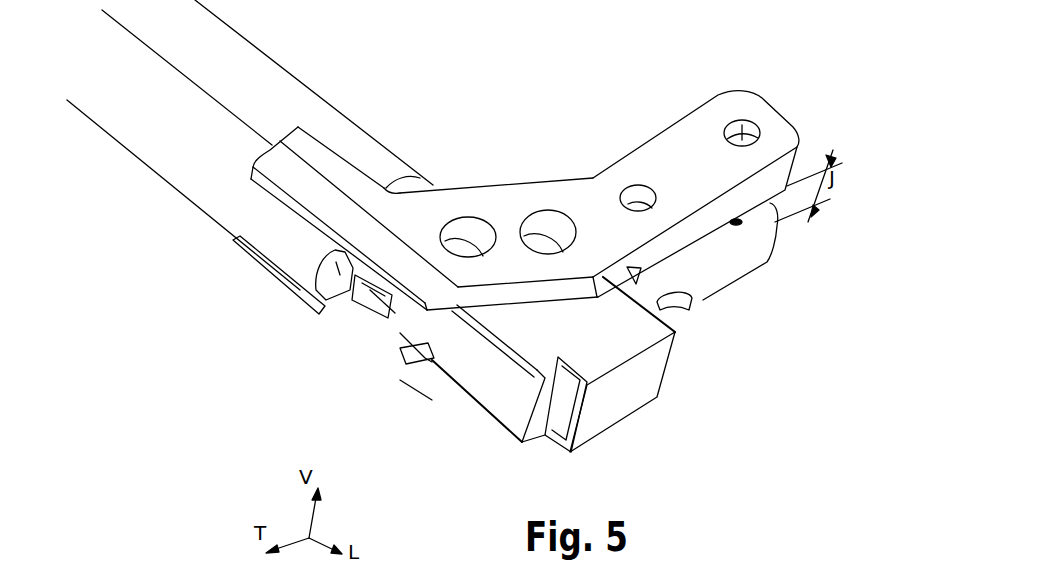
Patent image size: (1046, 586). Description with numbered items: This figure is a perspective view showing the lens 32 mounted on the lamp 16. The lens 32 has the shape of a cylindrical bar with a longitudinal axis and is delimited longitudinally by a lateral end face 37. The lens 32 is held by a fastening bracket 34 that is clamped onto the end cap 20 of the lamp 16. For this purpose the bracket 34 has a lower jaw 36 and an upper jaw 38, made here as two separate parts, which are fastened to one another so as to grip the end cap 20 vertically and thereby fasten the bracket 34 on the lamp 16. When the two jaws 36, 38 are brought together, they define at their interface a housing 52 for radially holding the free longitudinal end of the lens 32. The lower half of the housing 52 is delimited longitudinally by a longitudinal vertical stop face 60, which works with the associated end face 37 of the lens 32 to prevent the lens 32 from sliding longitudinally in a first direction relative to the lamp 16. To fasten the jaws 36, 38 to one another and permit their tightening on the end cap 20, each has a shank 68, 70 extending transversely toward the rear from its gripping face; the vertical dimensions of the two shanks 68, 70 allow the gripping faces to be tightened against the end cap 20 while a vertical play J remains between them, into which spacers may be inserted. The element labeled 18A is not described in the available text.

The lamp 16 is at (329, 91).
The bracket 18A is at (353, 151).
The lens 32 is at (194, 162).
The bracket 34 is at (500, 177).
The lateral end face 37 is at (320, 268).
The upper jaw 38 is at (588, 212).
The longitudinal vertical stop face 60 is at (334, 288).
The housing 52 is at (396, 313).
The lower jaw 36 is at (445, 394).
The end cap 20 is at (622, 393).
The shank 68 is at (723, 278).
The shank 70 is at (675, 143).